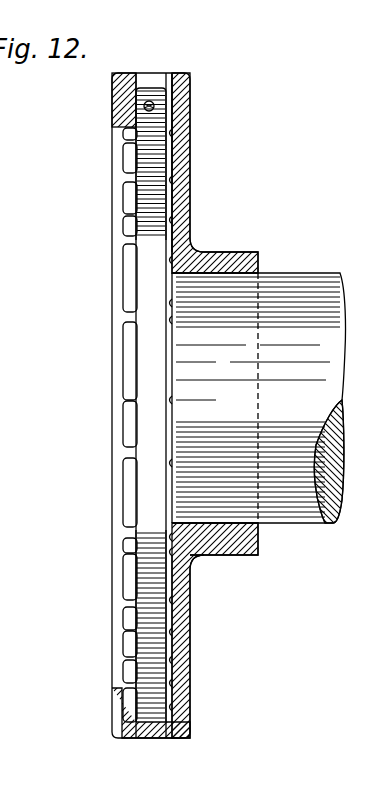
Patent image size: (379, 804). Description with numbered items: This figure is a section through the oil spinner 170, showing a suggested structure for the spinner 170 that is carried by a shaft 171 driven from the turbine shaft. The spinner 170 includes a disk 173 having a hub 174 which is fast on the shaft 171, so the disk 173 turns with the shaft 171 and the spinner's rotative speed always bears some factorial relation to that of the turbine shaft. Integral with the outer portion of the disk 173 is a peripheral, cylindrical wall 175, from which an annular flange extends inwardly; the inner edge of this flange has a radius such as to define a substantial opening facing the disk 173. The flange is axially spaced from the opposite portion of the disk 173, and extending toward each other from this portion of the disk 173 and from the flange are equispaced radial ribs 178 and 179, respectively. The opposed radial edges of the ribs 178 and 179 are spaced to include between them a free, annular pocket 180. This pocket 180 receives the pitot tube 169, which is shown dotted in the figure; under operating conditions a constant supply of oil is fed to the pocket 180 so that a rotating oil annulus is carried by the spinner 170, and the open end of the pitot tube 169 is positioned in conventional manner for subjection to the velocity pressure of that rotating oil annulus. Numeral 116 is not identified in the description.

The end cap 116 is at (111, 102).
The pitot tube 169 is at (172, 112).
The oil spinner 170 is at (213, 130).
The shaft 171 is at (288, 272).
The disk 173 is at (190, 191).
The hub 174 is at (226, 252).
The peripheral cylindrical wall 175 is at (153, 72).
The radial ribs 178 is at (172, 666).
The radial ribs 179 is at (121, 669).
The annular pocket 180 is at (151, 703).